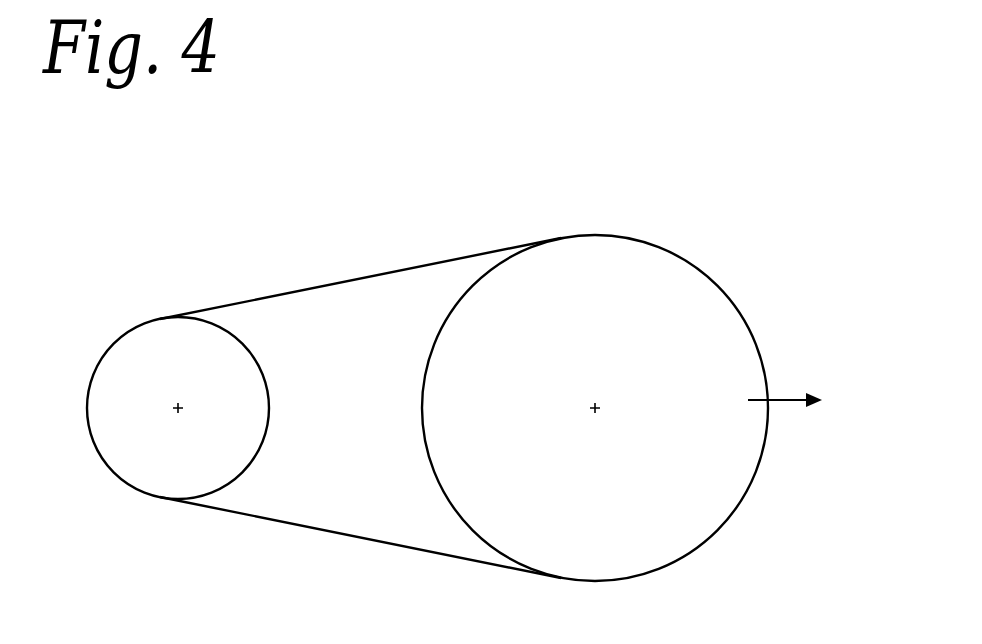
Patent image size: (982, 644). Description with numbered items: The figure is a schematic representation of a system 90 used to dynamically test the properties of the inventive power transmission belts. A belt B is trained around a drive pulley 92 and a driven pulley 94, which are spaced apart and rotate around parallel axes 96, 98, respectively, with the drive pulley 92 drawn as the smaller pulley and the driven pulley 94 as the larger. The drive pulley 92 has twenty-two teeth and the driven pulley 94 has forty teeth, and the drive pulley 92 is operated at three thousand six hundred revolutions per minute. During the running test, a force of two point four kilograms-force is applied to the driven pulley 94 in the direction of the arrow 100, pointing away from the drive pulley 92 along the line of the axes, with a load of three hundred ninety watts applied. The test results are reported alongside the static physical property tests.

The dynamic testing system 90 is at (735, 254).
The drive pulley 92 is at (173, 340).
The driven pulley 94 is at (613, 292).
The axis 96 is at (179, 406).
The axis 98 is at (596, 406).
The belt B is at (382, 273).
The arrow 100 is at (785, 403).